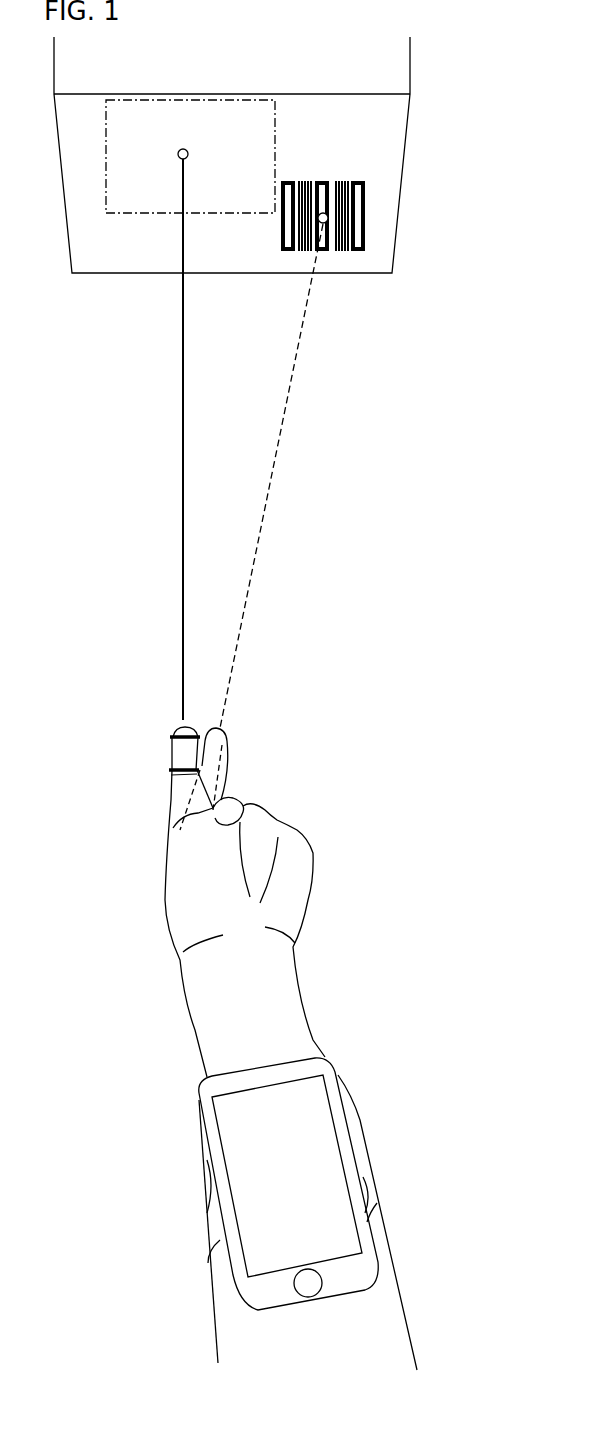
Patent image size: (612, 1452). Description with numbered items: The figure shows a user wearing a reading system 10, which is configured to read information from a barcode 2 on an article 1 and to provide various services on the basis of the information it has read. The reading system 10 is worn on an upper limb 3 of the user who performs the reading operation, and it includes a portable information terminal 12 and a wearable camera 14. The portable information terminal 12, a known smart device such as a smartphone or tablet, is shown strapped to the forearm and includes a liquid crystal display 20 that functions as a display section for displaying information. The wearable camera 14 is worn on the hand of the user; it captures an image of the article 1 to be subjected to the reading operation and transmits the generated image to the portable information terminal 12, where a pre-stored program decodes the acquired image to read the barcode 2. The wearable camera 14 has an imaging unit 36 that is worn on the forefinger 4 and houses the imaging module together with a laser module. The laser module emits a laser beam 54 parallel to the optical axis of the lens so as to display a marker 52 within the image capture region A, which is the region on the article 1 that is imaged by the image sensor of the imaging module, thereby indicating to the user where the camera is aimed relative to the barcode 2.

The article 1 is at (407, 142).
The image capture region A is at (278, 143).
The barcode 2 is at (372, 215).
The marker 52 is at (177, 157).
The laser beam 54 is at (180, 378).
The reading system 10 is at (478, 803).
The wearable camera 14 is at (170, 742).
The imaging unit 36 is at (176, 758).
The forefinger 4 is at (170, 790).
The upper limb 3 is at (118, 1028).
The portable information terminal 12 is at (338, 1062).
The liquid crystal display 20 is at (327, 1163).